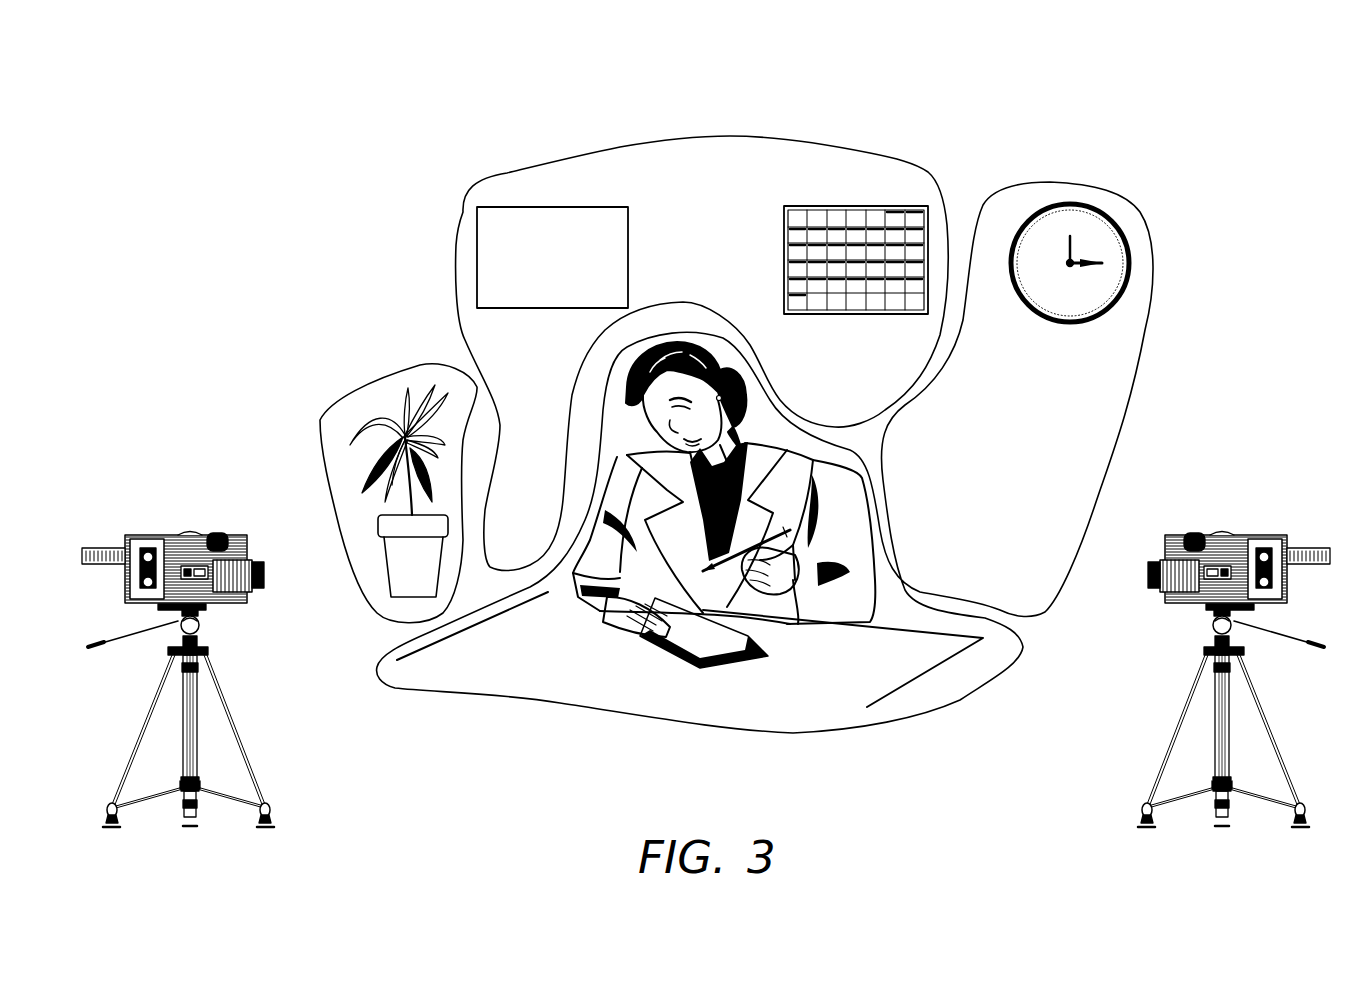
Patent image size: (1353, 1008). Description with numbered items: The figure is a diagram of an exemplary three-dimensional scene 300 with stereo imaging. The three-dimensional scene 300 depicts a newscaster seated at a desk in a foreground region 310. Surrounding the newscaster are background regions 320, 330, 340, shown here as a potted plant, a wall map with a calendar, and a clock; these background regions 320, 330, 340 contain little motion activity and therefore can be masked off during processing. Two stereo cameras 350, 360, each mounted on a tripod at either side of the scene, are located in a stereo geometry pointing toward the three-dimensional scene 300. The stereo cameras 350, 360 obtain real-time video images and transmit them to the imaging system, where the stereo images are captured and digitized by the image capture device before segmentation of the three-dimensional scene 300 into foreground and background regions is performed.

The 3-D scene 300 is at (1123, 123).
The foreground region 310 is at (910, 707).
The background region 320 is at (352, 400).
The background region 330 is at (520, 180).
The background region 340 is at (996, 203).
The stereo camera 350 is at (182, 540).
The stereo camera 360 is at (1237, 540).